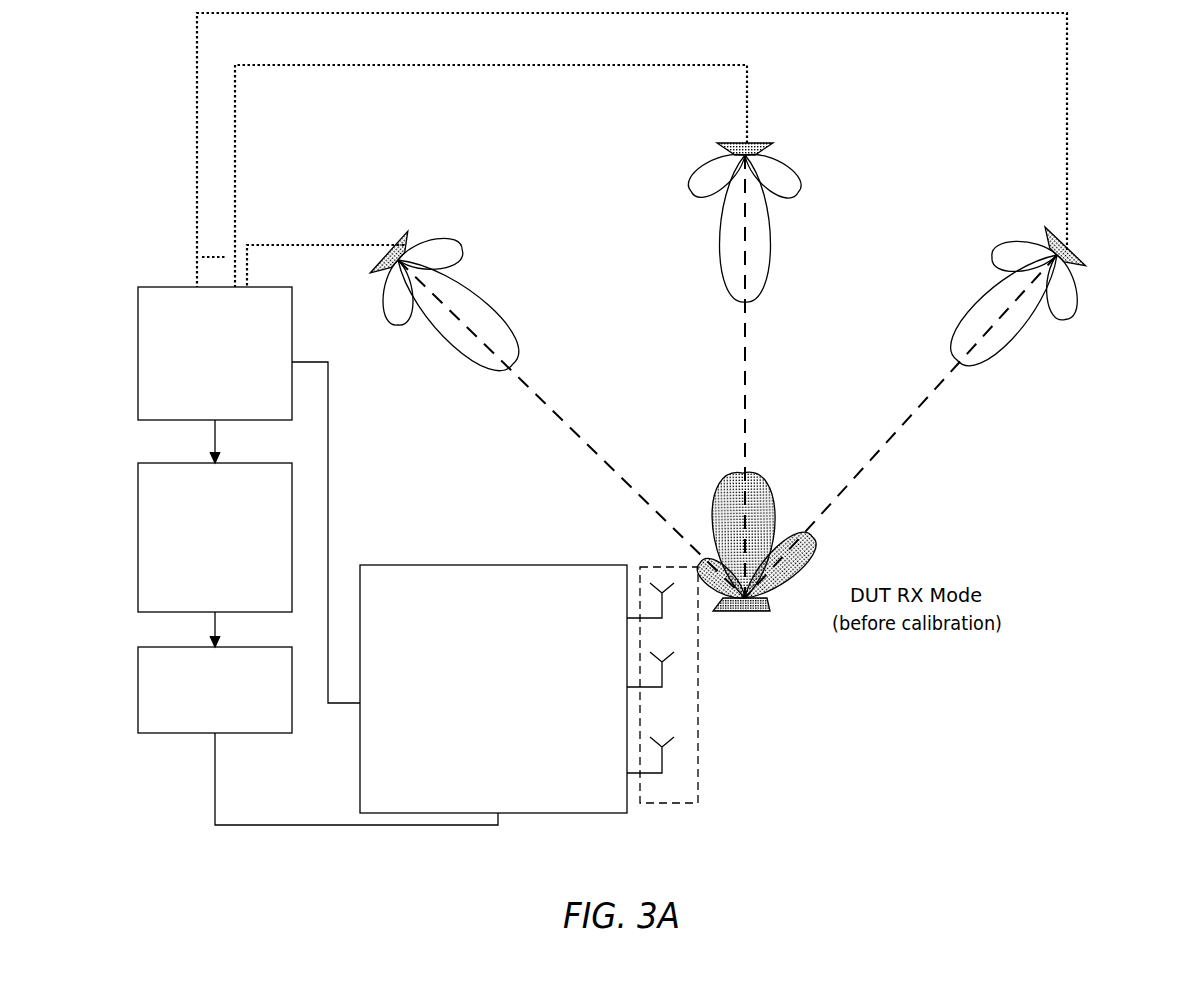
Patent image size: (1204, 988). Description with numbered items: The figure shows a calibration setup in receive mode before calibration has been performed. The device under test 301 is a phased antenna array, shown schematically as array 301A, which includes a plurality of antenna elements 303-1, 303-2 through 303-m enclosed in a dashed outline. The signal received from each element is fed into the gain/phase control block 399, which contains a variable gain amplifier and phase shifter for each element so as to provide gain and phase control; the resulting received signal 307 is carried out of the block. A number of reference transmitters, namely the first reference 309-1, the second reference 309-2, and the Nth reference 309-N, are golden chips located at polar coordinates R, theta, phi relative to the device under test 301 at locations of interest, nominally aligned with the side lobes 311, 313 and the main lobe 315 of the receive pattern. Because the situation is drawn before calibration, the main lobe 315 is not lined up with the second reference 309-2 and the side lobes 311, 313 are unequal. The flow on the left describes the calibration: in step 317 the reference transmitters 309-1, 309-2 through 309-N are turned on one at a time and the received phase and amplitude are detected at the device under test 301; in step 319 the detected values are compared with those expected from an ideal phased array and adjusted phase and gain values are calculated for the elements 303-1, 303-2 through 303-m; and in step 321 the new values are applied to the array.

The device under test 301 is at (738, 611).
The phased antenna array 301A is at (698, 770).
The antenna element 303-1 is at (662, 585).
The antenna element 303-2 is at (664, 667).
The antenna element 303-m is at (662, 775).
The received signal 307 is at (328, 437).
The reference transmitter 309-1 is at (413, 235).
The reference transmitter 309-2 is at (757, 143).
The reference transmitter 309-N is at (1068, 252).
The side lobe 311 is at (708, 557).
The side lobe 313 is at (805, 557).
The main lobe 315 is at (757, 490).
The step 317 is at (215, 353).
The step 319 is at (215, 537).
The step 321 is at (215, 690).
The gain/phase control block 399 is at (493, 689).